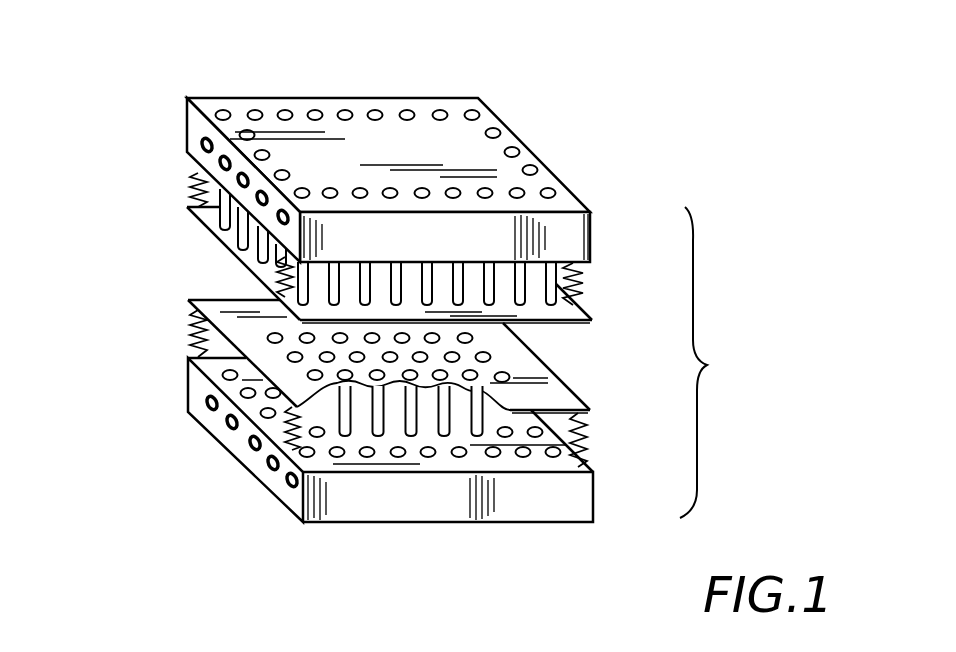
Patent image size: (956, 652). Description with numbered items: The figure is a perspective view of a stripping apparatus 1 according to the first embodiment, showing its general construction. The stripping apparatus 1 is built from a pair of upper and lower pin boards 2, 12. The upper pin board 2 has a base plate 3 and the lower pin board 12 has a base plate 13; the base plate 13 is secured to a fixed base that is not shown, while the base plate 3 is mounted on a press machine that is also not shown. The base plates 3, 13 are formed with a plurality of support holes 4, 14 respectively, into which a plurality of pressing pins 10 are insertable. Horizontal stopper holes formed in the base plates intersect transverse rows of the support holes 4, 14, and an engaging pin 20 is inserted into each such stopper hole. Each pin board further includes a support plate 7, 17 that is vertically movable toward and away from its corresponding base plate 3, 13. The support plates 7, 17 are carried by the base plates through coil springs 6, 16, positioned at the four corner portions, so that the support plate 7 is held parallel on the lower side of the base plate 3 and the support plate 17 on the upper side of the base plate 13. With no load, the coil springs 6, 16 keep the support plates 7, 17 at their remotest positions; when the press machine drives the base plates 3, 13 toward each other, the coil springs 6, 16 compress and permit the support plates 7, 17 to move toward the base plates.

The stripping apparatus 1 is at (707, 362).
The upper pin board 2 is at (359, 168).
The base plate 3 is at (488, 122).
The support holes 4 is at (316, 110).
The coil springs 6 is at (192, 178).
The support plate 7 is at (227, 237).
The pressing pins 10 is at (528, 293).
The lower pin board 12 is at (352, 448).
The base plate 13 is at (520, 510).
The support holes 14 is at (243, 393).
The coil springs 16 is at (197, 333).
The support plate 17 is at (197, 303).
The engaging pin 20 is at (210, 143).